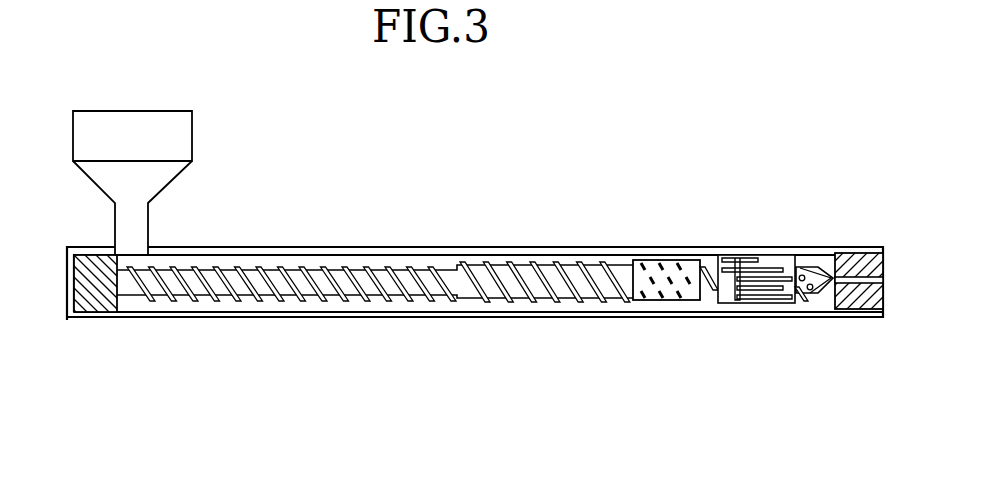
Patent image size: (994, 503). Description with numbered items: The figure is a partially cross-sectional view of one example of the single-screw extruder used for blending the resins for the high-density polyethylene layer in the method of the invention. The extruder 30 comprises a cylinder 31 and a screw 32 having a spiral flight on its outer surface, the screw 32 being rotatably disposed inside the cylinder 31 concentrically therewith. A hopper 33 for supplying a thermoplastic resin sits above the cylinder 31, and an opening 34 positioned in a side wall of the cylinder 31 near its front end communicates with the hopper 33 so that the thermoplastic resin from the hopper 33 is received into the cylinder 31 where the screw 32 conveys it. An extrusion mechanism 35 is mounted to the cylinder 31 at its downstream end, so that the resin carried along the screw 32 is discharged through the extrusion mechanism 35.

The extruder 30 is at (492, 270).
The cylinder 31 is at (277, 247).
The screw 32 is at (485, 301).
The hopper 33 is at (192, 133).
The opening 34 is at (117, 250).
The extrusion mechanism 35 is at (862, 300).